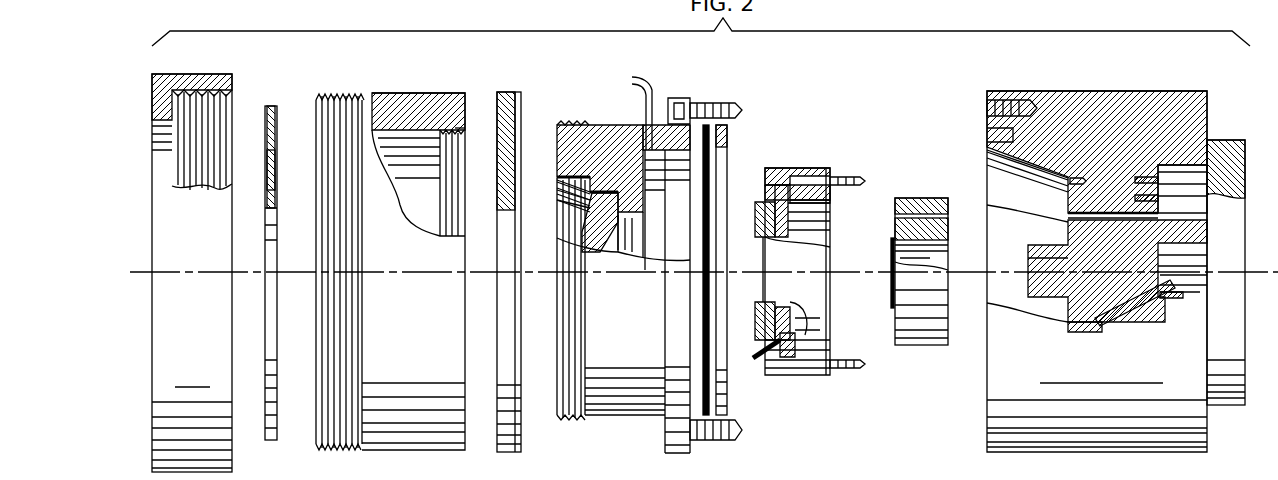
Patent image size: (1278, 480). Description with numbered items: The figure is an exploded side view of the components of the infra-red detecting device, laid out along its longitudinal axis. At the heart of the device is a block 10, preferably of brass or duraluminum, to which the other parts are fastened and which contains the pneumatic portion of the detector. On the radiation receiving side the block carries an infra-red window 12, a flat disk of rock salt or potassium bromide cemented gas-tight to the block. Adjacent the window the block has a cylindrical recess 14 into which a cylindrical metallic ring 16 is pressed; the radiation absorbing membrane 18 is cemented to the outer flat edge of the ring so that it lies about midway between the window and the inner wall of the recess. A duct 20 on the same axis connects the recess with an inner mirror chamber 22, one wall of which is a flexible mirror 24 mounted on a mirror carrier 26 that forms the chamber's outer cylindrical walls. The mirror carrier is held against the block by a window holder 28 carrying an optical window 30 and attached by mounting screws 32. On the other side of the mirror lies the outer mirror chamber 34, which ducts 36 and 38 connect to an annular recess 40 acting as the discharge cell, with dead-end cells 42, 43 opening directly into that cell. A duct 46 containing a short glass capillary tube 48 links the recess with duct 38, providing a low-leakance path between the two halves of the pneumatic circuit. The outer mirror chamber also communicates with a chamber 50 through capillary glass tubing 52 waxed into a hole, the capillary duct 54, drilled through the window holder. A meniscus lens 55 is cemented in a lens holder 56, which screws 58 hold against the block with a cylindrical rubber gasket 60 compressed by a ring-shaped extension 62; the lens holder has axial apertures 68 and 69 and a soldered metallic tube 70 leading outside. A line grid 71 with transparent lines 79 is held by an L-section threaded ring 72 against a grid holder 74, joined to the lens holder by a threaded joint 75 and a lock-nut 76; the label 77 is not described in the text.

The block 10 is at (1143, 100).
The infra-red window 12 is at (1222, 148).
The cylindrical recess 14 is at (1207, 298).
The cylindrical metallic ring 16 is at (1207, 290).
The radiation absorbing membrane 18 is at (1207, 268).
The duct 20 is at (1028, 258).
The inner mirror chamber 22 is at (948, 255).
The flexible mirror 24 is at (890, 265).
The mirror carrier 26 is at (915, 340).
The window holder 28 is at (794, 366).
The optical window 30 is at (760, 204).
The mounting screws 32 is at (848, 177).
The outer mirror chamber 34 is at (757, 318).
The duct 36 is at (950, 207).
The duct 38 is at (1068, 326).
The annular recess 40 is at (1245, 199).
The cylindrical dead-end cell 42 is at (1158, 186).
The cylindrical dead-end cell 43 is at (1207, 215).
The duct 46 is at (1103, 322).
The glass capillary tube 48 is at (1165, 300).
The chamber 50 is at (655, 128).
The capillary glass tubing 52 is at (757, 354).
The capillary duct 54 is at (818, 333).
The meniscus lens 55 is at (560, 238).
The lens holder 56 is at (612, 405).
The screws 58 is at (732, 102).
The cylindrical rubber gasket 60 is at (728, 138).
The ring-shaped extension 62 is at (710, 128).
The axial aperture 68 is at (628, 245).
The axial aperture 69 is at (560, 210).
The metallic tube 70 is at (646, 80).
The line grid 71 is at (272, 106).
The threaded ring 72 is at (200, 75).
The grid holder 74 is at (405, 442).
The threaded joint 75 is at (458, 130).
The lock-nut 76 is at (505, 442).
The disc lower edge 77 is at (268, 232).
The transparent lines 79 is at (267, 166).